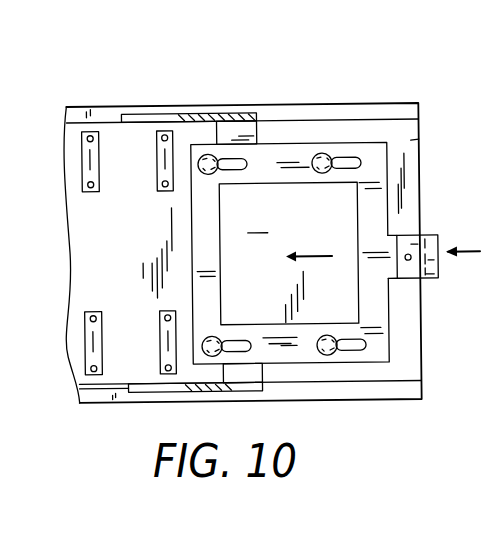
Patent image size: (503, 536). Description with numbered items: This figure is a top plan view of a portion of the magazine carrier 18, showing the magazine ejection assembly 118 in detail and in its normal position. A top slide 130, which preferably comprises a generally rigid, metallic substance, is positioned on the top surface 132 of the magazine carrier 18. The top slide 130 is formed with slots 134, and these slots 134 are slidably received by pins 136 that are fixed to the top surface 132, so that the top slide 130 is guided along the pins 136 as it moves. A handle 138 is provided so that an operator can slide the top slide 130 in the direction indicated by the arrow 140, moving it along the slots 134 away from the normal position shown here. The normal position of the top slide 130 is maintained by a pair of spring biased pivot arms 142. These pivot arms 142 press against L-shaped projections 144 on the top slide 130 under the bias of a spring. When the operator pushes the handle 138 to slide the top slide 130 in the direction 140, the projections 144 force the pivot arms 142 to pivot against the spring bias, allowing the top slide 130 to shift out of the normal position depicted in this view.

The magazine carrier 18 is at (446, 75).
The magazine ejection assembly 118 is at (296, 137).
The top slide 130 is at (192, 225).
The top surface 132 is at (419, 142).
The slots 134 is at (221, 160).
The pins 136 is at (319, 178).
The handle 138 is at (434, 236).
The arrow 140 is at (310, 256).
The spring biased pivot arms 142 is at (188, 112).
The L-shaped projections 144 is at (259, 116).